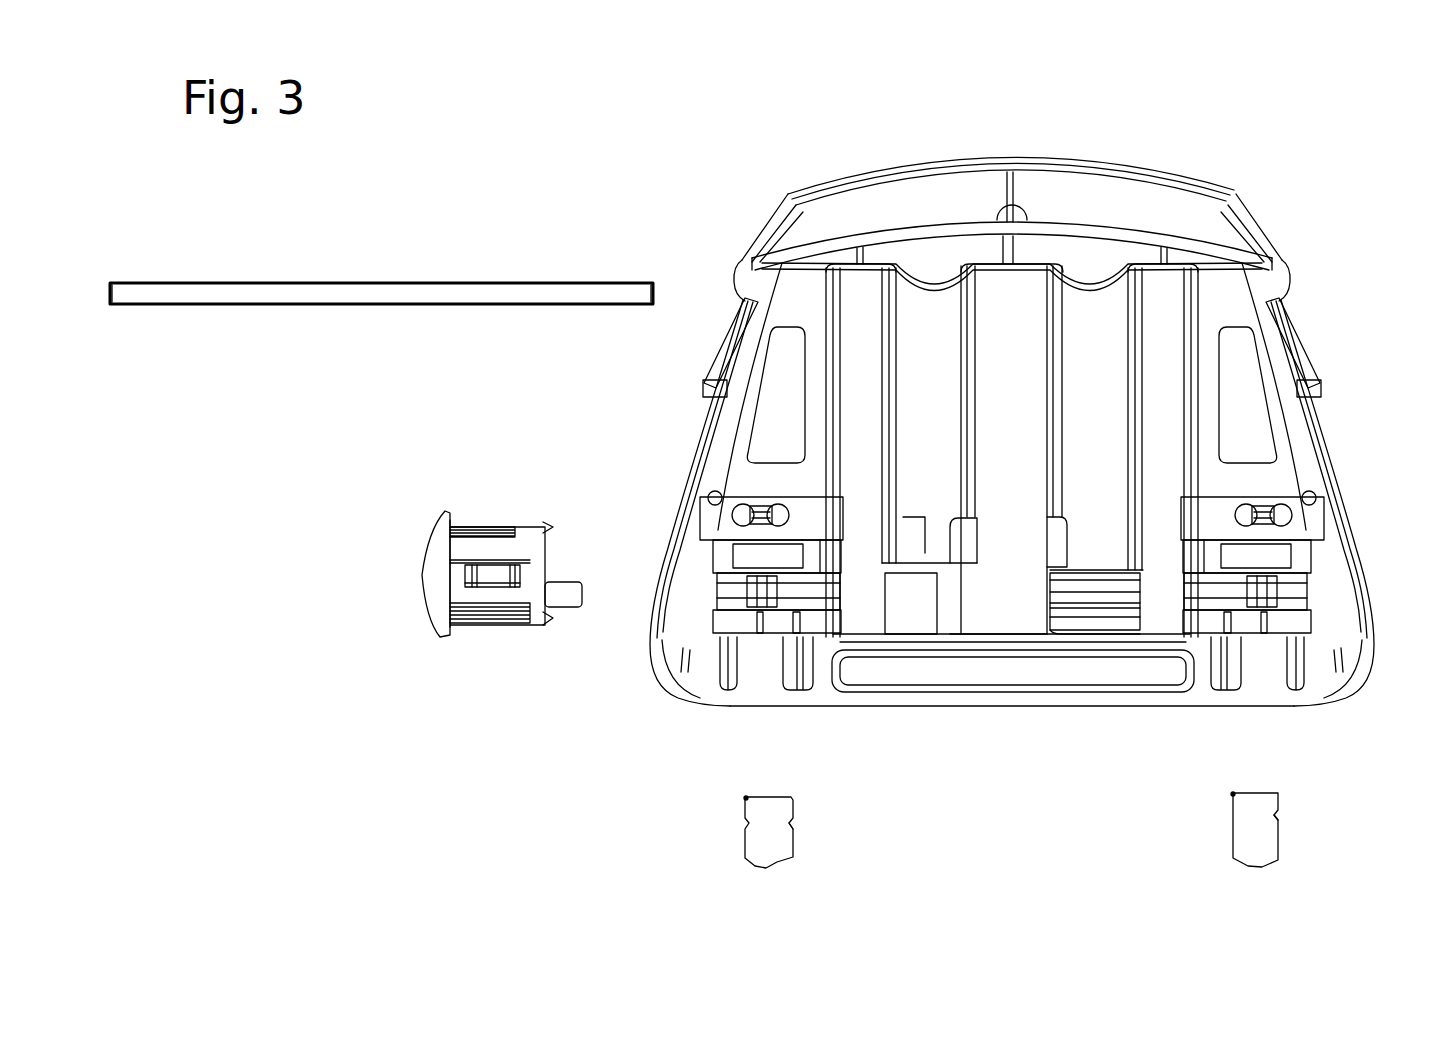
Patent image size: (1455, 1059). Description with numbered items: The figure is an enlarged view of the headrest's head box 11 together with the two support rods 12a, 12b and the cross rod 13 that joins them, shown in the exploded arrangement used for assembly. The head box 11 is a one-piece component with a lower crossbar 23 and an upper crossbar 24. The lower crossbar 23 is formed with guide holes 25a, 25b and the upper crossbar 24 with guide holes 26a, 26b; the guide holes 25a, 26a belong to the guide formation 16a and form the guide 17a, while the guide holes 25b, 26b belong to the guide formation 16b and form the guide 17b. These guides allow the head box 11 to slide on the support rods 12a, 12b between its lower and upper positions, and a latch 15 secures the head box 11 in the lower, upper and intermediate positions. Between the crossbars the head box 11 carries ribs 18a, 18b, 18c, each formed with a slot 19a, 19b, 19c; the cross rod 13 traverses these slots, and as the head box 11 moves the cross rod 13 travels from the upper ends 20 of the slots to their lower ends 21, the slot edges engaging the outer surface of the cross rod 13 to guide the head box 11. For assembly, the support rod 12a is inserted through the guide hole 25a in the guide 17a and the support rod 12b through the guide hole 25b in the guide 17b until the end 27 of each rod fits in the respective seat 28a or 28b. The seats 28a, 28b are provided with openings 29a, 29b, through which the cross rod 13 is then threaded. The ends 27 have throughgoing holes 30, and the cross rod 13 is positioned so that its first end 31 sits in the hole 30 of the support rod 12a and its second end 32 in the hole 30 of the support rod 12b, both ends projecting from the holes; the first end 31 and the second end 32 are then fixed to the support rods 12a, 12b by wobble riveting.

The head box 11 is at (1143, 203).
The support rod 12a is at (765, 834).
The support rod 12b is at (1250, 832).
The cross rod 13 is at (340, 297).
The latch 15 is at (716, 602).
The guide formation 16a is at (690, 674).
The guide formation 16b is at (1290, 703).
The guide 17a is at (752, 493).
The guide 17b is at (1272, 495).
The rib 18a is at (862, 288).
The rib 18b is at (1022, 286).
The rib 18c is at (1160, 286).
The slot 19a is at (832, 357).
The slot 19b is at (961, 385).
The slot 19c is at (1135, 385).
The upper ends 20 is at (768, 238).
The lower ends 21 is at (815, 487).
The lower crossbar 23 is at (964, 676).
The upper crossbar 24 is at (825, 522).
The guide hole 25a is at (764, 710).
The guide hole 25b is at (1264, 708).
The guide hole 26a is at (722, 556).
The guide hole 26b is at (1312, 573).
The ends 27 is at (746, 797).
The seat 28a is at (736, 260).
The seat 28b is at (1275, 263).
The opening 29a is at (728, 294).
The opening 29b is at (1296, 294).
The holes 30 is at (797, 812).
The first end 31 is at (128, 297).
The second end 32 is at (620, 296).